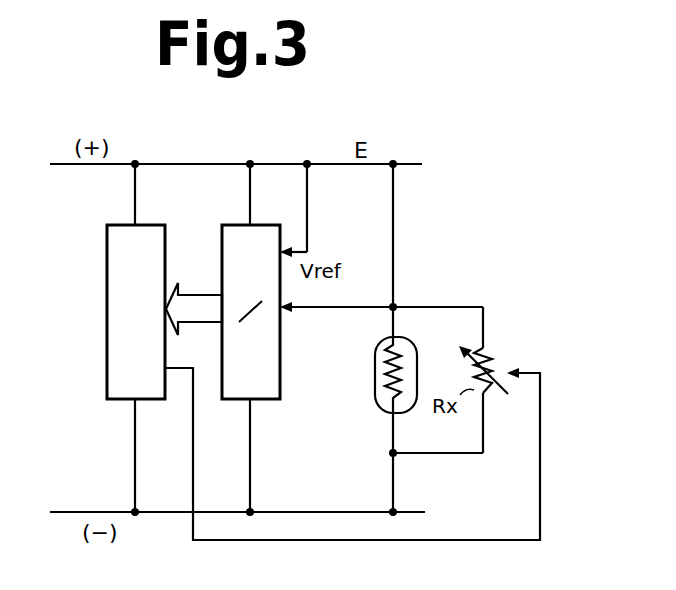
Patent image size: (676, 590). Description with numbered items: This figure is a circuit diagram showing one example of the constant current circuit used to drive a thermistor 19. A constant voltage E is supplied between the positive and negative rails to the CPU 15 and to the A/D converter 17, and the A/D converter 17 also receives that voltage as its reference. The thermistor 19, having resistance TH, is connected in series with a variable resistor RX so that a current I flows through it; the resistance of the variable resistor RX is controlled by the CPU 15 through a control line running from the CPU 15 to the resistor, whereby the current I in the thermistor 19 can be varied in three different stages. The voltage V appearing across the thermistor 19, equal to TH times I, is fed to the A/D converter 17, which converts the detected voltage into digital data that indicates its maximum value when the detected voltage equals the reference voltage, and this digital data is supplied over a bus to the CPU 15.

The CPU 15 is at (107, 225).
The A/D converter 17 is at (222, 225).
The thermistor 19 is at (375, 399).